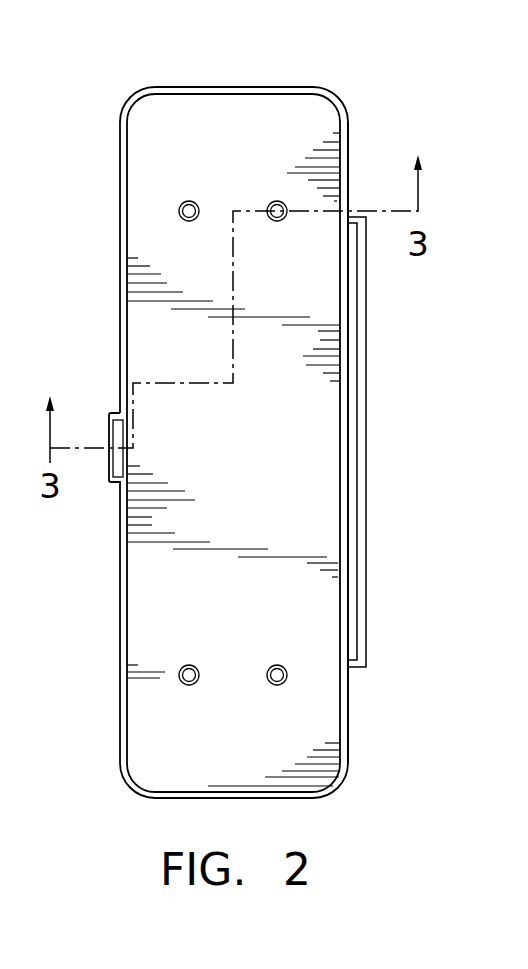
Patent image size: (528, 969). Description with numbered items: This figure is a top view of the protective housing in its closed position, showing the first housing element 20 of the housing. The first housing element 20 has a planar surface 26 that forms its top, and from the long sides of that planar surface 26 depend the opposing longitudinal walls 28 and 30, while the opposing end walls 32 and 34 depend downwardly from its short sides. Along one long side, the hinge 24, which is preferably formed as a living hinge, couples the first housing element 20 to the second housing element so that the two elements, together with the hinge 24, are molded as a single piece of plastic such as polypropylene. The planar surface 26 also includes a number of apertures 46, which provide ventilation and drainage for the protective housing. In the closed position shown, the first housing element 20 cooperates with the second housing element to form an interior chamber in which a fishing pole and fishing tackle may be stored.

The first housing element 20 is at (117, 87).
The hinge 24 is at (366, 433).
The planar surface 26 is at (228, 119).
The longitudinal wall 28 is at (349, 185).
The longitudinal wall 30 is at (118, 212).
The end wall 32 is at (268, 87).
The end wall 34 is at (263, 798).
The apertures 46 is at (276, 200).